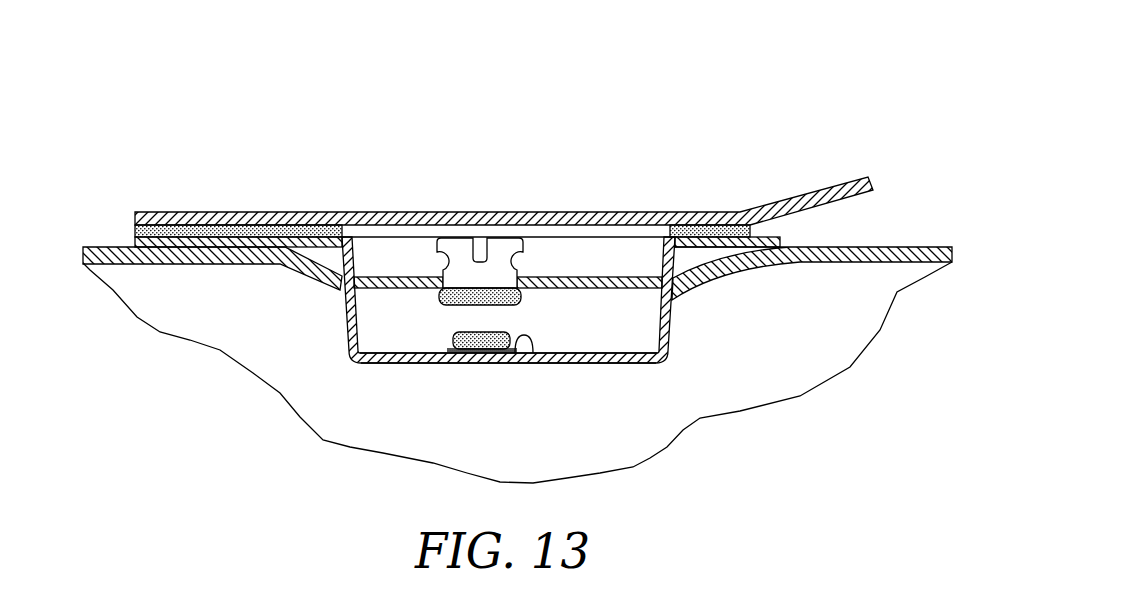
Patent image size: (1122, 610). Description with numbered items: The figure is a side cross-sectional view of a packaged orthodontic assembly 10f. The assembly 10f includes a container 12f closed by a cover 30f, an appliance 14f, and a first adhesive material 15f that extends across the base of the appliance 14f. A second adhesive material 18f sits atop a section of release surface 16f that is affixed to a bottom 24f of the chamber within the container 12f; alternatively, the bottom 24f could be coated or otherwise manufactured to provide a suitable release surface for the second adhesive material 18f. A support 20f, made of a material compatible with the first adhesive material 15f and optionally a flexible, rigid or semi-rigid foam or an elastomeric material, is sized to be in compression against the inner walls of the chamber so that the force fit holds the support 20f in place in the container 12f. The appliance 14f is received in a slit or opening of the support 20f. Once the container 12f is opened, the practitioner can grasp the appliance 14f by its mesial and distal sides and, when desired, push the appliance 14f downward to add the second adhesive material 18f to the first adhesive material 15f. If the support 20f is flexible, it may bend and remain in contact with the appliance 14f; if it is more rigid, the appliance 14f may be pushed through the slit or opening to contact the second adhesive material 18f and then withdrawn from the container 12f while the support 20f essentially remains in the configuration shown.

The packaged orthodontic assembly 10f is at (251, 159).
The container 12f is at (377, 197).
The appliance 14f is at (460, 229).
The first adhesive material 15f is at (455, 308).
The release surface 16f is at (533, 353).
The second adhesive material 18f is at (500, 331).
The support 20f is at (379, 295).
The bottom 24f is at (600, 364).
The cover 30f is at (622, 203).